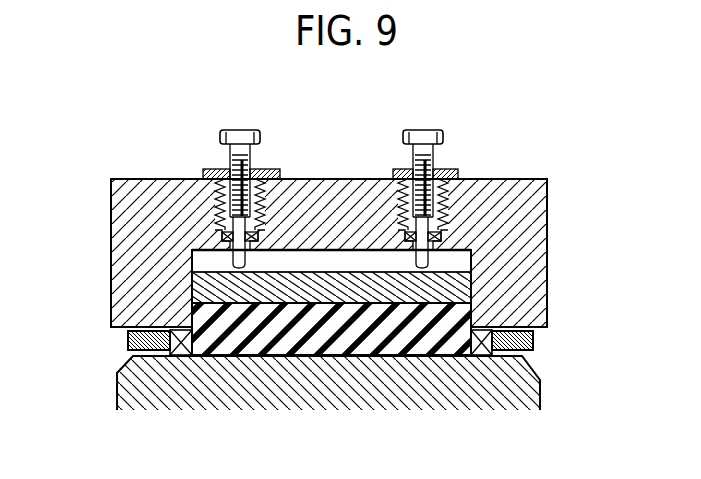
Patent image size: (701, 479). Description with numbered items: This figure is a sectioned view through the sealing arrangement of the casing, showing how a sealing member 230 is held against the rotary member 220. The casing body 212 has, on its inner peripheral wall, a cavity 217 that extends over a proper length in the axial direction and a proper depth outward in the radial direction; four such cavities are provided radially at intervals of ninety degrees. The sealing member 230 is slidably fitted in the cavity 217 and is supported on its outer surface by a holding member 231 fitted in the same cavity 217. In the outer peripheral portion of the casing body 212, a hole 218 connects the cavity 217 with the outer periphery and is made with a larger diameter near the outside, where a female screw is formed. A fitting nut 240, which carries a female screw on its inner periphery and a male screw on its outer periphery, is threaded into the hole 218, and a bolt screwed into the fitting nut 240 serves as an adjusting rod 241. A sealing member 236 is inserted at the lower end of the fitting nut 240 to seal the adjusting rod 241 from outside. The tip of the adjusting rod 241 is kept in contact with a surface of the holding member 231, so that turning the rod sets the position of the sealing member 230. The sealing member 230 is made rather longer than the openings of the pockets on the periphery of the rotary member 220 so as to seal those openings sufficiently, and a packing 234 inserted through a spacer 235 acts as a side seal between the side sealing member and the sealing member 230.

The casing body 212 is at (111, 249).
The cavity 217 is at (352, 251).
The hole 218 is at (252, 253).
The rotary member 220 is at (332, 380).
The sealing member 230 is at (266, 345).
The holding member 231 is at (390, 293).
The packing 234 is at (180, 356).
The spacer 235 is at (128, 340).
The sealing member 236 is at (219, 238).
The fitting nut 240 is at (266, 171).
The adjusting rod 241 is at (220, 135).